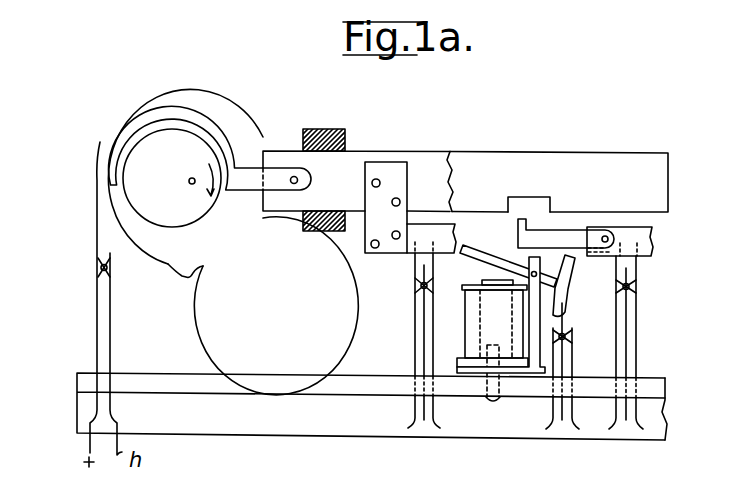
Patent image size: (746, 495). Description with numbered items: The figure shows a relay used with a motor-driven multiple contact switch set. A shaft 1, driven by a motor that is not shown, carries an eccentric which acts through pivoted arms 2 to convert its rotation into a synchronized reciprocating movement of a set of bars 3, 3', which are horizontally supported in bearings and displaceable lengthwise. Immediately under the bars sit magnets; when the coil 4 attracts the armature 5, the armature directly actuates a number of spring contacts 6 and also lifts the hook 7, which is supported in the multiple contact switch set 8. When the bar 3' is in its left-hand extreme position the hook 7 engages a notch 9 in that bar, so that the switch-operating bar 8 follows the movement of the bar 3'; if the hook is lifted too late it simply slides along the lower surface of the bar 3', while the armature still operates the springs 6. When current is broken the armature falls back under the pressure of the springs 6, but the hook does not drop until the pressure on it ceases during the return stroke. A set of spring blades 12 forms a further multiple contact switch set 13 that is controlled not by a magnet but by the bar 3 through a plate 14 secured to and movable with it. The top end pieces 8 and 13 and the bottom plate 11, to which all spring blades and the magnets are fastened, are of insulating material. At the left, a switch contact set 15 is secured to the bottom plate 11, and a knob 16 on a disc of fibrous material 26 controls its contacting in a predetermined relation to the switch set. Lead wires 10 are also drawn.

The shaft 1 is at (189, 181).
The pivoted arms 2 is at (243, 184).
The bar 3 is at (358, 169).
The bar 3' is at (559, 159).
The coil 4 is at (472, 318).
The armature 5 is at (479, 256).
The spring contacts 6 is at (553, 360).
The hook 7 is at (518, 237).
The multiple contact switch set 8 is at (646, 236).
The notch 9 is at (527, 202).
The lead wires 10 is at (626, 335).
The bottom plate 11 is at (320, 383).
The spring blades 12 is at (420, 330).
The multiple contact switch set 13 is at (411, 252).
The plate 14 is at (383, 170).
The switch contact set 15 is at (110, 326).
The knob 16 is at (190, 278).
The disc of fibrous material 26 is at (247, 122).